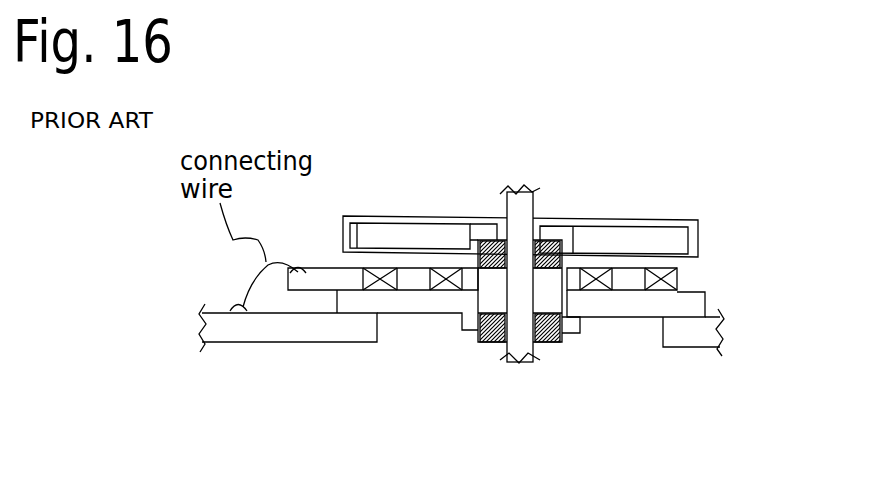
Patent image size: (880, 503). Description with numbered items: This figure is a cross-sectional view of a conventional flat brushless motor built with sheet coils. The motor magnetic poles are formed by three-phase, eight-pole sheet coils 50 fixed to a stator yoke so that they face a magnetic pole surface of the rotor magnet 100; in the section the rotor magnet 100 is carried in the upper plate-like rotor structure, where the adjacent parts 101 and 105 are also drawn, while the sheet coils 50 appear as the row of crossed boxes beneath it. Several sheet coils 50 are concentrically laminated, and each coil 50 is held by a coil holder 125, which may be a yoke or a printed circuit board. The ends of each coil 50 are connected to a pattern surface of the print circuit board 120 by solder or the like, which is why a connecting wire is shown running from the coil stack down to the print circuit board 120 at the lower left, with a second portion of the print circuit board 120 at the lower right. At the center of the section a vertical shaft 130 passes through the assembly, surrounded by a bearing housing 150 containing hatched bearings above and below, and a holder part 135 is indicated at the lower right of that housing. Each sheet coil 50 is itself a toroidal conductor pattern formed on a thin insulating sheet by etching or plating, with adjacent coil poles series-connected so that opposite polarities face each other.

The rotor magnet 100 is at (637, 240).
The magnet 101 is at (592, 220).
The rotor frame 105 is at (408, 217).
The coil holder 125 is at (420, 310).
The sheet coil 50 is at (633, 285).
The print circuit board 120 is at (288, 327).
The bearing housing 150 is at (478, 222).
The bearing holder 135 is at (587, 343).
The shaft 130 is at (516, 195).